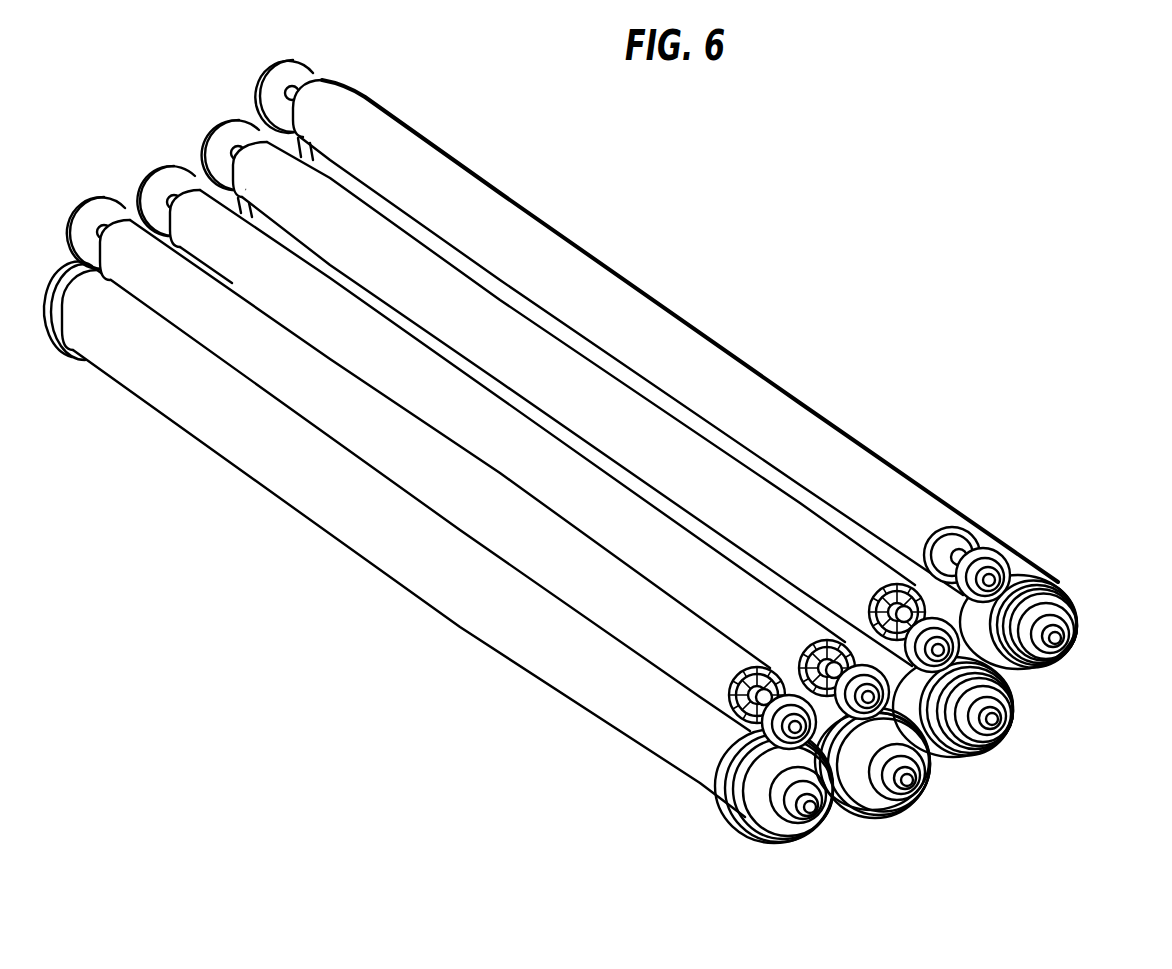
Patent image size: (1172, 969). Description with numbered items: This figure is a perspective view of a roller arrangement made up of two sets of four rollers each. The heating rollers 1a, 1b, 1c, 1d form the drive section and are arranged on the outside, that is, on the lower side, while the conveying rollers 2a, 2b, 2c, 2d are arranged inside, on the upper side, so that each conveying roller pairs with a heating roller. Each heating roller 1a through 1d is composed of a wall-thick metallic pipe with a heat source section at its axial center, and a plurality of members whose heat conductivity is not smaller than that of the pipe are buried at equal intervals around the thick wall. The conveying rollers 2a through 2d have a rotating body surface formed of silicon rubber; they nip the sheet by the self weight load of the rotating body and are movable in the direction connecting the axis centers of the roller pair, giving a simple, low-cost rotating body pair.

The heating roller 1a is at (1078, 621).
The heating roller 1b is at (1015, 707).
The heating roller 1c is at (930, 767).
The heating roller 1d is at (833, 807).
The conveying roller 2a is at (872, 483).
The conveying roller 2b is at (745, 493).
The conveying roller 2c is at (693, 597).
The conveying roller 2d is at (582, 594).